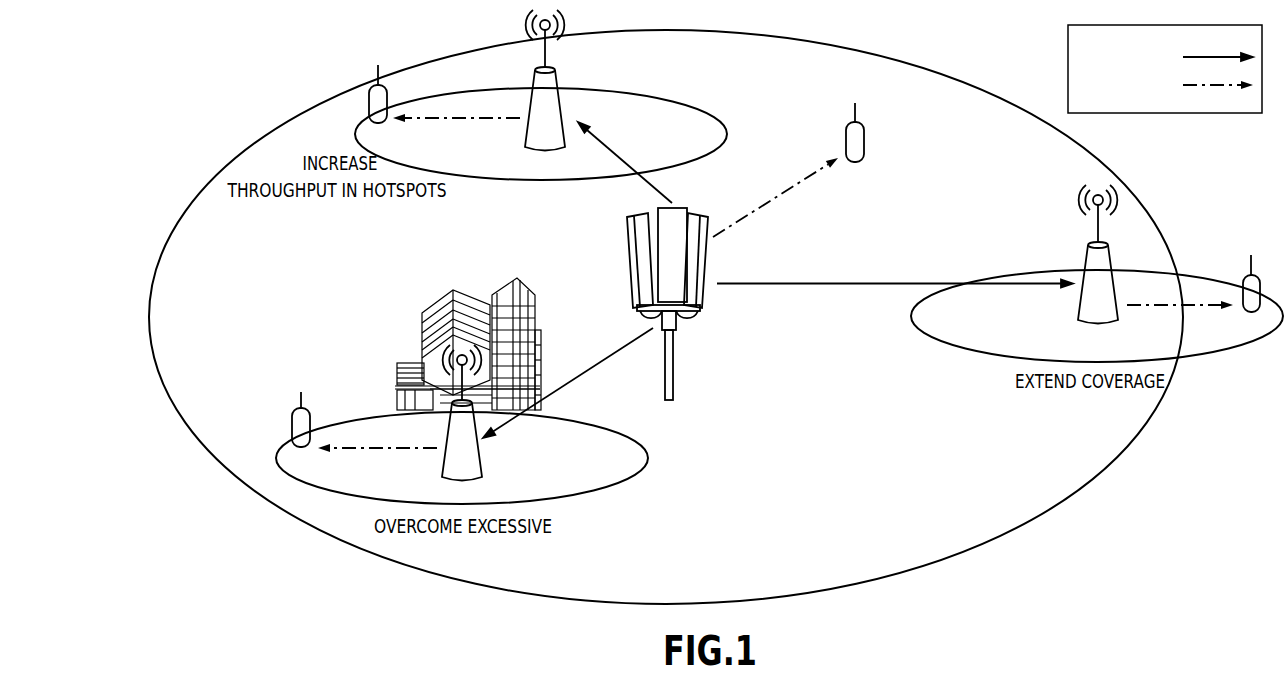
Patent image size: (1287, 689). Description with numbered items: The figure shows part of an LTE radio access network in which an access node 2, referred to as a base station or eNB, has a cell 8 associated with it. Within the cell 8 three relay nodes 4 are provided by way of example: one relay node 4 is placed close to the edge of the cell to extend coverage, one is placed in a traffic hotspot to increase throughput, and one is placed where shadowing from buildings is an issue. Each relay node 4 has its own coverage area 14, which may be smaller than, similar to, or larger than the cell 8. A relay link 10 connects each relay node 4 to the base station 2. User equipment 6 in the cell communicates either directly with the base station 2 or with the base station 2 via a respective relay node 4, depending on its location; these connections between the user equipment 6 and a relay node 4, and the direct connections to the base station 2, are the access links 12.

The access node 2 is at (700, 297).
The relay node 4 is at (560, 112).
The user equipment 6 is at (369, 107).
The cell 8 is at (1042, 520).
The relay link 10 is at (623, 157).
The connection 12 is at (440, 118).
The coverage area 14 is at (595, 178).